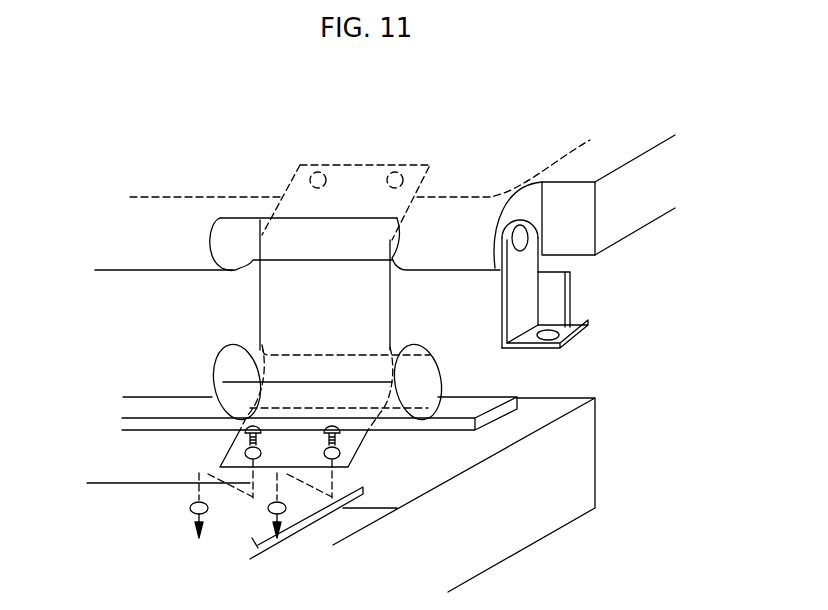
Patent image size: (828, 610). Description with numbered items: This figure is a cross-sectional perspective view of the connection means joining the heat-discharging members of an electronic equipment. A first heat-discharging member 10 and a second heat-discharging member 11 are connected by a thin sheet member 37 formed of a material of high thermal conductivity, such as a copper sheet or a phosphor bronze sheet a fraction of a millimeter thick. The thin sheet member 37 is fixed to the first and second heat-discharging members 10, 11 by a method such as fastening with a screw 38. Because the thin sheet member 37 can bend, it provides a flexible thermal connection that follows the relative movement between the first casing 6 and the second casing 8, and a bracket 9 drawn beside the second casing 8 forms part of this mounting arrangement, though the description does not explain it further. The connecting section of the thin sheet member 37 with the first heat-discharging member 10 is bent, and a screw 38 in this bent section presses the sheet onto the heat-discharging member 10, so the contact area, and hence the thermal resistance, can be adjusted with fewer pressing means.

The first casing 6 is at (585, 468).
The second casing 8 is at (638, 212).
The L-shaped bracket 9 is at (588, 328).
The first heat-discharging member 10 is at (264, 556).
The second heat-discharging member 11 is at (538, 158).
The thin sheet member 37 is at (273, 303).
The screw 38 is at (308, 162).